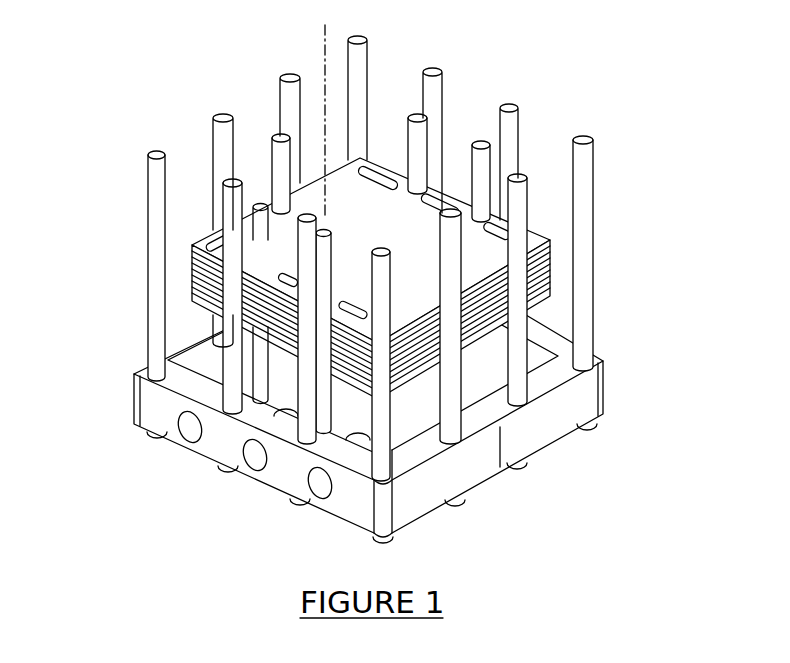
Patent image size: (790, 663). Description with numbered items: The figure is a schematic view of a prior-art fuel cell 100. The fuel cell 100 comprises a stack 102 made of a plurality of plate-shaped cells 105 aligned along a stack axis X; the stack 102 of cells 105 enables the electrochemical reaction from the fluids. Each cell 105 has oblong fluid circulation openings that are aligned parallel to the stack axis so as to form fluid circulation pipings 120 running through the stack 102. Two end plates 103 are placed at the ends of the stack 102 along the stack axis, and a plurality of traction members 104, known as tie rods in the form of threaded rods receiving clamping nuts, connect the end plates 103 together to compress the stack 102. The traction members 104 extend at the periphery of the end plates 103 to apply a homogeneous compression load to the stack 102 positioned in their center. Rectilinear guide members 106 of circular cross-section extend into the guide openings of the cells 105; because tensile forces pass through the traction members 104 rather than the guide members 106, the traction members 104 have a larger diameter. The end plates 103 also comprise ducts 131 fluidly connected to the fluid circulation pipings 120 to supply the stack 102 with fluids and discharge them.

The fuel cell 100 is at (373, 278).
The stack 102 is at (373, 214).
The end plates 103 is at (596, 398).
The traction members 104 is at (212, 120).
The cells 105 is at (193, 268).
The guide members 106 is at (280, 150).
The fluid circulation pipings 120 is at (375, 173).
The ducts 131 is at (193, 437).